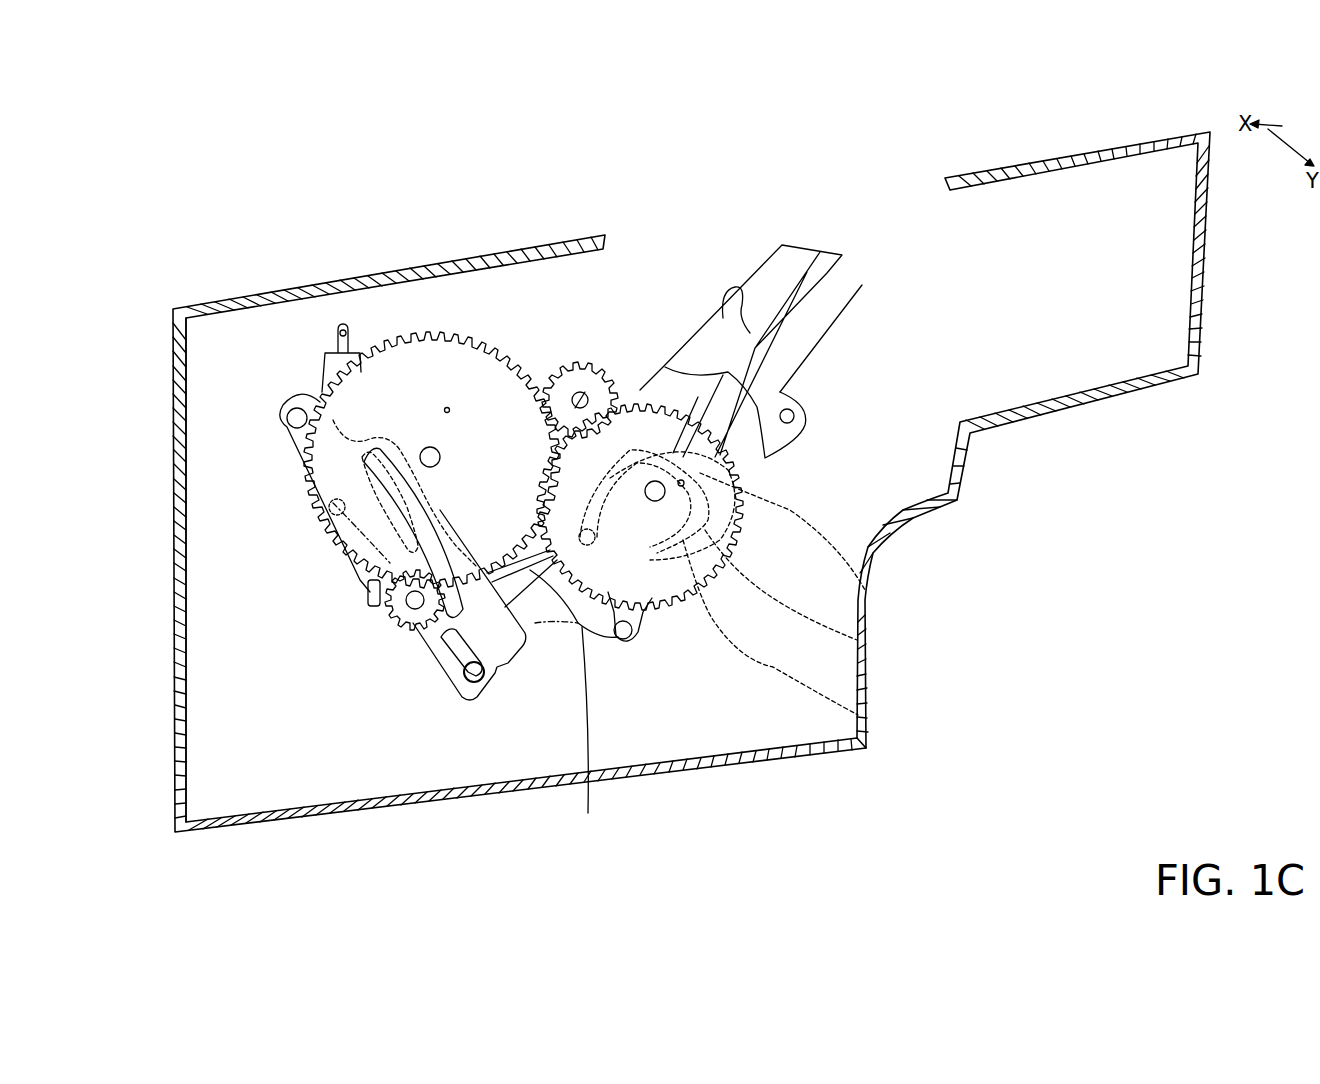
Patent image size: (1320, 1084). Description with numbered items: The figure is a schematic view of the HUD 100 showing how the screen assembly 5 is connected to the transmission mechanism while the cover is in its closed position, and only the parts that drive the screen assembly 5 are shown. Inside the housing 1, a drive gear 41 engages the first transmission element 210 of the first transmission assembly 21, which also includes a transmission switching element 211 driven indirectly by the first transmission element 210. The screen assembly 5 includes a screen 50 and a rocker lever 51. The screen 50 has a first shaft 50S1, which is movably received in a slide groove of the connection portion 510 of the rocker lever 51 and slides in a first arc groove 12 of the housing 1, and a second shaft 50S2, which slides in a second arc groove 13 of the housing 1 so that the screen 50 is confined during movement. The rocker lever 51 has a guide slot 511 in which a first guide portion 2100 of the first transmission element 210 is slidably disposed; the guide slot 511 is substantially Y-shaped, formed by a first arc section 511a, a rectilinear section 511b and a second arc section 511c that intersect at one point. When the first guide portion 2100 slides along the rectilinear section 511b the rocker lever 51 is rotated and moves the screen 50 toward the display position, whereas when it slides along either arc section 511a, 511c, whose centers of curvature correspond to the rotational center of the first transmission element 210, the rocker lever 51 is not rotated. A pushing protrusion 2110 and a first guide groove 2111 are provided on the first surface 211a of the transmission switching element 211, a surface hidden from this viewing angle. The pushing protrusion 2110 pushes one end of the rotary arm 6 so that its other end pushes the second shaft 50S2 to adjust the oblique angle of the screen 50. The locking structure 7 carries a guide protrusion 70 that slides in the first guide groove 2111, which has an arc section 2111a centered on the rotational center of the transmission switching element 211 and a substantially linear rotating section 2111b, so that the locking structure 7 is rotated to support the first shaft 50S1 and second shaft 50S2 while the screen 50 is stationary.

The housing 1 is at (1203, 262).
The HUD 100 is at (161, 199).
The first transmission assembly 21 is at (511, 213).
The first transmission element 210 is at (437, 365).
The transmission switching element 211 is at (562, 497).
The pushing protrusion 2110 is at (553, 367).
The locking structure 7 is at (593, 540).
The rotary arm 6 is at (792, 380).
The first guide portion 2100 is at (333, 503).
The first guide groove 2111 is at (968, 582).
The arc section 2111a is at (865, 590).
The rotating section 2111b is at (857, 640).
The first surface 211a is at (858, 715).
The guide slot 511 is at (107, 523).
The first arc section 511a is at (327, 542).
The rectilinear section 511b is at (368, 590).
The second arc section 511c is at (400, 503).
The drive gear 41 is at (400, 625).
The screen assembly 5 is at (565, 852).
The rocker lever 51 is at (482, 667).
The screen 50 is at (548, 628).
The connection portion 510 is at (443, 665).
The first shaft 50S1 is at (467, 673).
The second shaft 50S2 is at (632, 647).
The first arc groove 12 is at (594, 737).
The second arc groove 13 is at (648, 627).
The guide protrusion 70 is at (691, 578).